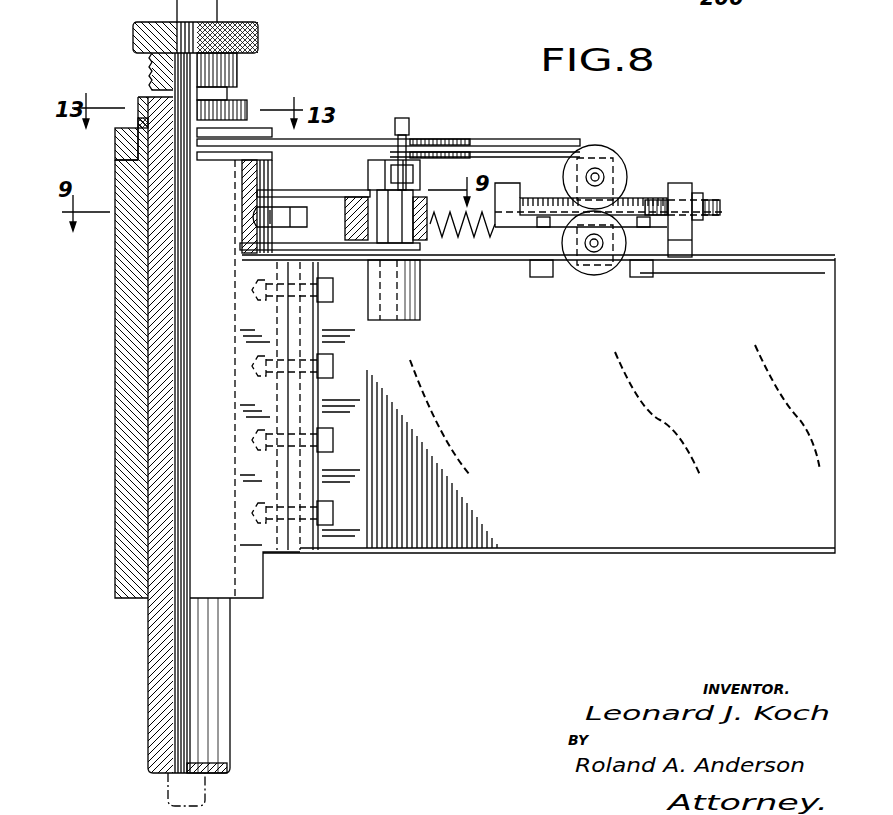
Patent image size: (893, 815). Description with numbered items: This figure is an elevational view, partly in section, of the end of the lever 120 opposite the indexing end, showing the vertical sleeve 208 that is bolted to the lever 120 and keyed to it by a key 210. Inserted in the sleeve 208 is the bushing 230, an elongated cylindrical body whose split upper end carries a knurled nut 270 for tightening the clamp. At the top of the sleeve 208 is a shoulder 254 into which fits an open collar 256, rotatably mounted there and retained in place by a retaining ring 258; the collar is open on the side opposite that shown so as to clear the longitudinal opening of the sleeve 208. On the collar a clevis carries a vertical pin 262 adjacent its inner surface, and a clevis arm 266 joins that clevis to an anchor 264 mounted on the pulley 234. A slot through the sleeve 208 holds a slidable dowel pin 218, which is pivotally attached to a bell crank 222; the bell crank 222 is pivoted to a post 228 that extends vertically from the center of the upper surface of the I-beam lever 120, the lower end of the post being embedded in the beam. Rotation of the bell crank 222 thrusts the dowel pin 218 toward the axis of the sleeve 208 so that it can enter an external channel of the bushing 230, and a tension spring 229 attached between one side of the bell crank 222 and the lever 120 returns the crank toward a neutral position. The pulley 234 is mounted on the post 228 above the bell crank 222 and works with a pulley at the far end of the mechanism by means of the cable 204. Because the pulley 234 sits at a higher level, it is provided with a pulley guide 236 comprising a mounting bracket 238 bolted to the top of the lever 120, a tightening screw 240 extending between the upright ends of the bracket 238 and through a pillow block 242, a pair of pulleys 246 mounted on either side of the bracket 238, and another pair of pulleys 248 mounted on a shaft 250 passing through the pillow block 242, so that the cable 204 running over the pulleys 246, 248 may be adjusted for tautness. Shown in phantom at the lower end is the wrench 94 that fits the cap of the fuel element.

The wrench 94 is at (205, 788).
The lever 120 is at (620, 530).
The cable 204 is at (780, 266).
The sleeve 208 is at (132, 290).
The key 210 is at (300, 548).
The dowel pin 218 is at (262, 213).
The bell crank 222 is at (340, 206).
The post 228 is at (412, 290).
The tension spring 229 is at (462, 236).
The bushing 230 is at (222, 727).
The pulley 234 is at (470, 142).
The pulley guide 236 is at (693, 176).
The mounting bracket 238 is at (690, 240).
The tightening screw 240 is at (650, 196).
The pillow block 242 is at (603, 172).
The pulleys 246 is at (585, 265).
The pulleys 248 is at (590, 168).
The shaft 250 is at (612, 190).
The shoulder 254 is at (128, 161).
The open collar 256 is at (116, 151).
The retaining ring 258 is at (138, 118).
The vertical pin 262 is at (232, 97).
The anchor 264 is at (410, 132).
The clevis arm 266 is at (345, 148).
The nut 270 is at (235, 66).